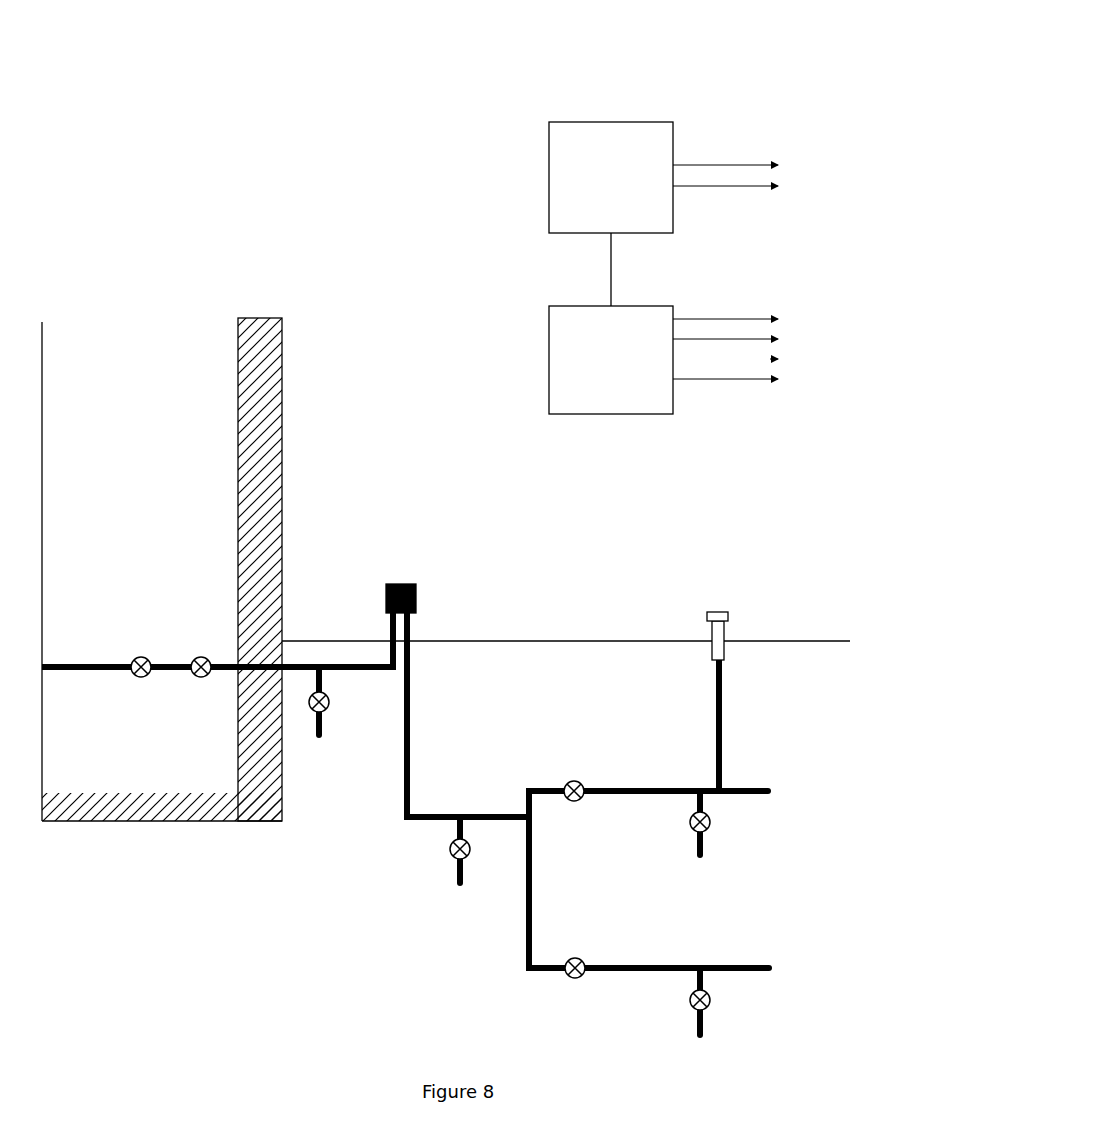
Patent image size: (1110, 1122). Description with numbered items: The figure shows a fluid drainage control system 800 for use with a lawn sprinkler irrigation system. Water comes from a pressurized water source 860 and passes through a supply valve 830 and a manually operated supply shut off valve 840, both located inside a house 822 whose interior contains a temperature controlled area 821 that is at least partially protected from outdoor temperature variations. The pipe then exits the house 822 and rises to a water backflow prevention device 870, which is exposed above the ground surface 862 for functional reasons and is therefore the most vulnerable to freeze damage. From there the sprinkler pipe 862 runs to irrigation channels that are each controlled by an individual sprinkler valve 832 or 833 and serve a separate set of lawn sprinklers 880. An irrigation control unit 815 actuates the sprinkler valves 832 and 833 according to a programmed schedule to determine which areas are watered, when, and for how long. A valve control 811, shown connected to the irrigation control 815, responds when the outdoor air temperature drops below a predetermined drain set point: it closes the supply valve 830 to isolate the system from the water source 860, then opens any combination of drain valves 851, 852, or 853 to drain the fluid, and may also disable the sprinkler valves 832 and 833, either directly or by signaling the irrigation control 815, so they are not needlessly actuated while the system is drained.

The fluid drainage control system 800 is at (690, 30).
The valve control 811 is at (565, 305).
The irrigation control unit 815 is at (565, 120).
The temperature controlled area 821 is at (177, 323).
The house 822 is at (268, 316).
The supply valve 830 is at (141, 655).
The sprinkler valve 832 is at (577, 803).
The sprinkler valve 833 is at (578, 980).
The supply shut off valve 840 is at (203, 680).
The drain valve 851 is at (330, 700).
The drain valve 852 is at (448, 845).
The drain valve 853 is at (712, 818).
The pressurized water source 860 is at (71, 680).
The sprinkler pipe 862 is at (530, 641).
The water backflow prevention device 870 is at (412, 584).
The lawn sprinkler 880 is at (730, 628).